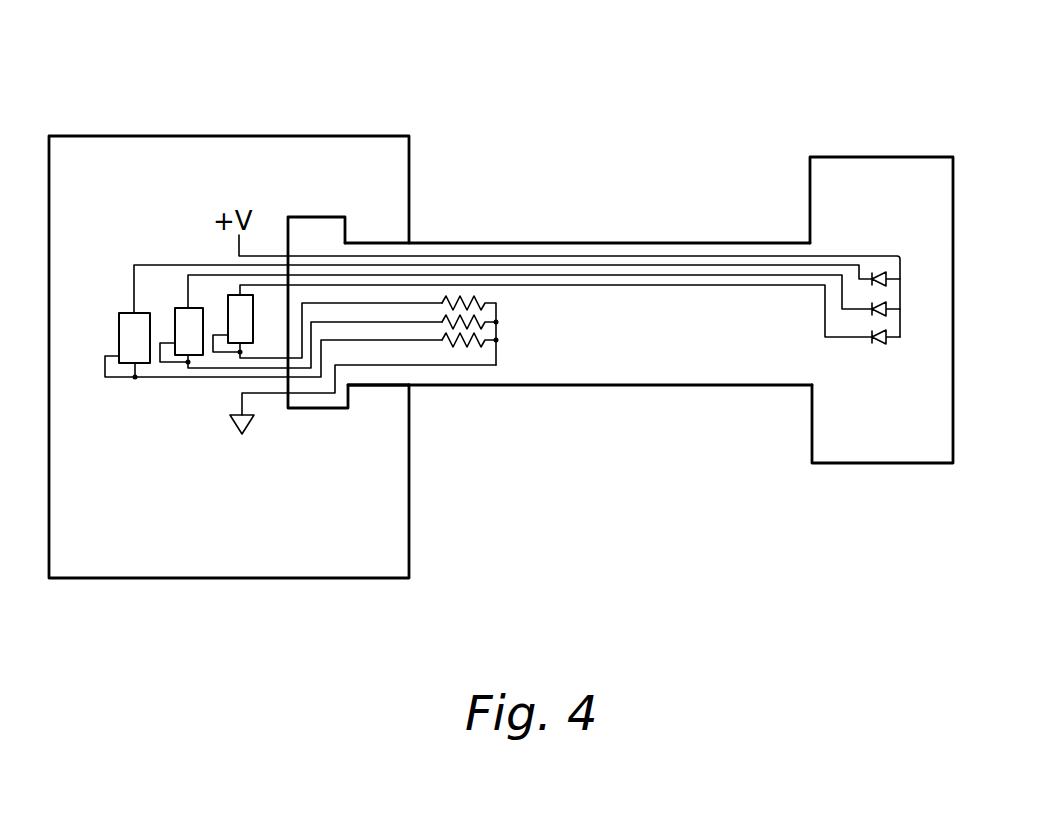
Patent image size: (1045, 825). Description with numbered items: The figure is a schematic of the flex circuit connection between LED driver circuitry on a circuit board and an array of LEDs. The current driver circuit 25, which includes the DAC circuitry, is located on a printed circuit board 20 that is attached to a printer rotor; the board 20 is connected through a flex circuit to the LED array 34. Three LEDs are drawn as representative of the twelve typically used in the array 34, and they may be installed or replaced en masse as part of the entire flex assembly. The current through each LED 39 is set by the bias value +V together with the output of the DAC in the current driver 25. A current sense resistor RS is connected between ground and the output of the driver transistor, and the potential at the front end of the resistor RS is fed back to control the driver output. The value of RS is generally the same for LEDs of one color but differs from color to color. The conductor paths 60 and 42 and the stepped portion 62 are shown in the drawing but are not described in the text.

The printed circuit board 20 is at (213, 130).
The LED array 34 is at (685, 165).
The upper neck wall 60 is at (738, 252).
The lower neck wall 42 is at (640, 388).
The LED 39 is at (909, 262).
The current driver circuit 25 is at (108, 296).
The stepped housing portion 62 is at (375, 373).
The current sense resistor RS is at (475, 353).